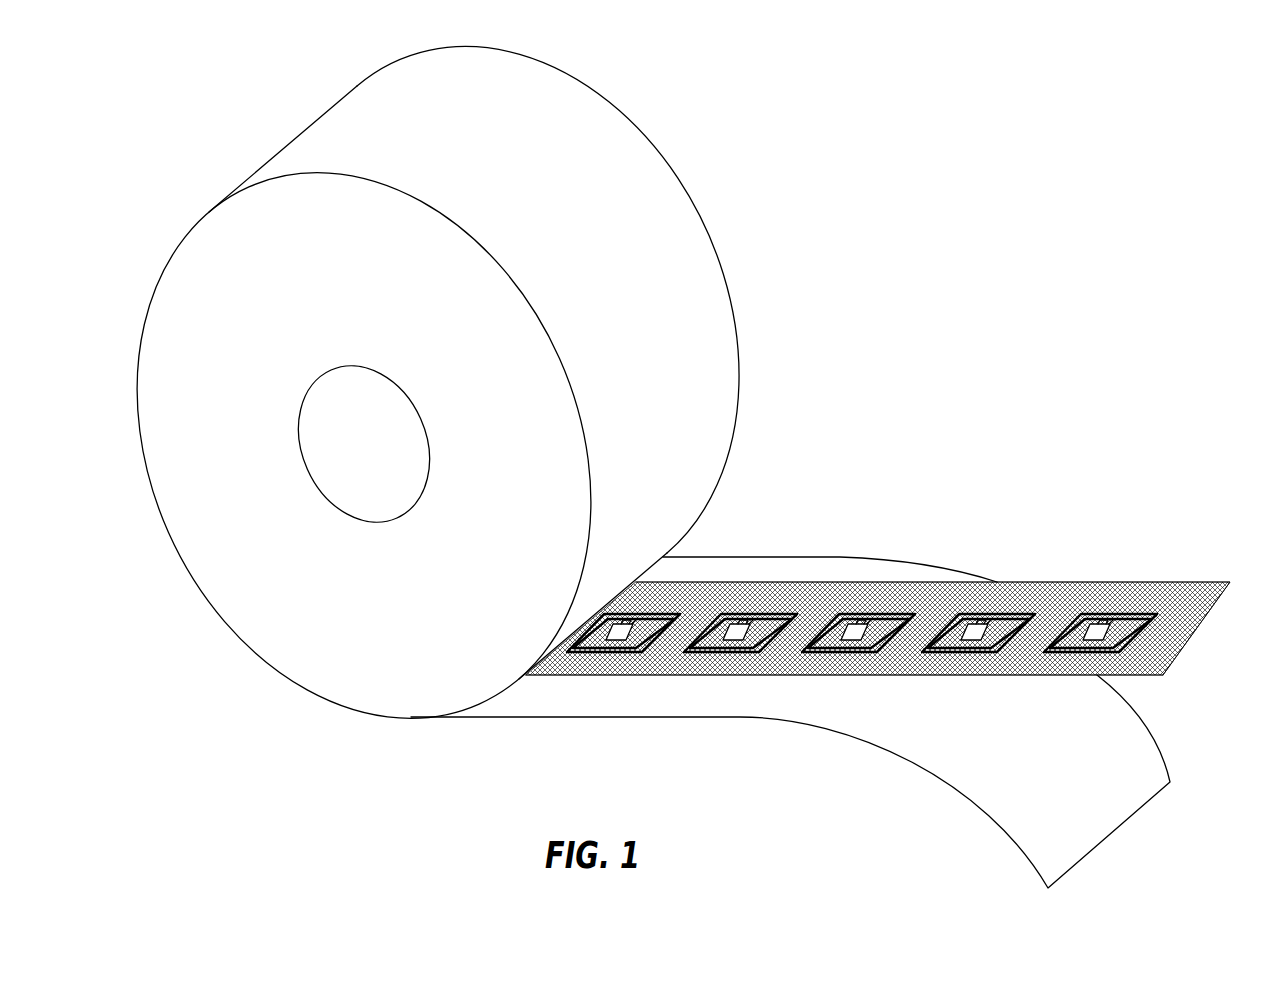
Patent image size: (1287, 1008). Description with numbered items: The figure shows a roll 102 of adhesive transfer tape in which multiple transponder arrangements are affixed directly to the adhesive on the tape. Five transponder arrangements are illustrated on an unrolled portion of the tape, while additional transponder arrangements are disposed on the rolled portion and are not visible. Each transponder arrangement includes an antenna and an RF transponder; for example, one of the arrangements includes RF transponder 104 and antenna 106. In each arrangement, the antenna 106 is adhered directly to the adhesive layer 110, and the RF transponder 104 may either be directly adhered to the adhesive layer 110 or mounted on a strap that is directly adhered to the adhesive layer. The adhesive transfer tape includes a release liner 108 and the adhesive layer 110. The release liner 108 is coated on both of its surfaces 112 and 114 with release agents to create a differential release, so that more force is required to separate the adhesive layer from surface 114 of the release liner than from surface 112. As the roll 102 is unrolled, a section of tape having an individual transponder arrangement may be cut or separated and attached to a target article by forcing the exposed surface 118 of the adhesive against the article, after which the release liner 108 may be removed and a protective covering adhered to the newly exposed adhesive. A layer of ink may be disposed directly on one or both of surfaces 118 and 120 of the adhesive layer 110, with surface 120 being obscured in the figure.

The roll 102 is at (651, 145).
The RF transponder 104 is at (737, 637).
The antenna 106 is at (772, 612).
The release liner 108 is at (1165, 763).
The adhesive layer 110 is at (1083, 583).
The surface 112 is at (712, 462).
The surface 114 is at (723, 565).
The exposed surface 118 is at (1187, 598).
The surface 120 is at (1193, 635).